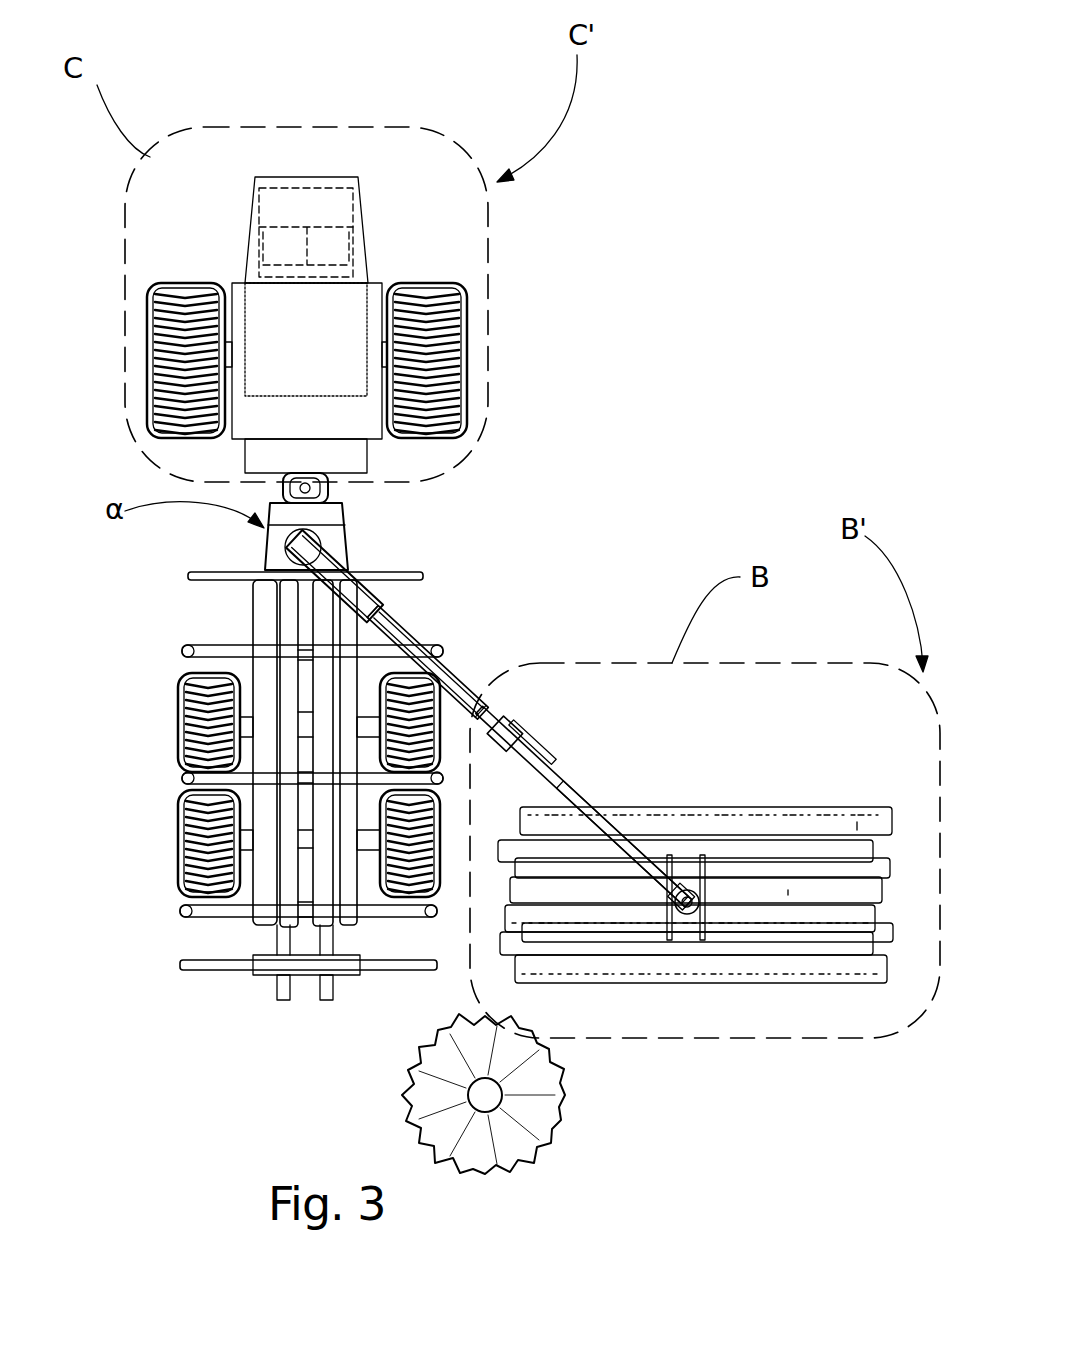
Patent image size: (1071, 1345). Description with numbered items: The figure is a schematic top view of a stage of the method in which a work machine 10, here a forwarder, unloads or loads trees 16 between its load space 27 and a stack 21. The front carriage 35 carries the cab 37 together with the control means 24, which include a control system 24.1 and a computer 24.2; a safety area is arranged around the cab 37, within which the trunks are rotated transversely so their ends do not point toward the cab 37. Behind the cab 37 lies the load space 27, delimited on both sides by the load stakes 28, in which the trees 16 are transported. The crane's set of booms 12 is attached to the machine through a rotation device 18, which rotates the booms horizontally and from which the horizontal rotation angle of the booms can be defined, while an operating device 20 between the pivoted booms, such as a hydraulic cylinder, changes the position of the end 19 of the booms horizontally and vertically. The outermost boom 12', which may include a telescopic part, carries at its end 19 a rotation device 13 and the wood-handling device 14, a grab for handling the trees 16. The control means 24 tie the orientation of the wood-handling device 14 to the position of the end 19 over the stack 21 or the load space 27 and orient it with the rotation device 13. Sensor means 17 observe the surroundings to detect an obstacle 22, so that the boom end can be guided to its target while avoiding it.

The work machine 10 is at (658, 490).
The set of booms 12 is at (492, 690).
The outermost boom 12' is at (623, 793).
The rotation device 13 is at (672, 920).
The wood-handling device 14 is at (722, 905).
The trees 16 is at (288, 927).
The sensor means 17 is at (753, 853).
The rotation device of the set of booms 18 is at (343, 542).
The end of the set of booms 19 is at (670, 908).
The operating device 20 is at (462, 668).
The stack 21 is at (737, 750).
The obstacle 22 is at (483, 1093).
The control means 24 is at (326, 229).
The control system 24.1 is at (330, 237).
The computer 24.2 is at (285, 237).
The load space 27 is at (220, 625).
The load stakes 28 is at (182, 651).
The front carriage 35 is at (512, 356).
The cab 37 is at (326, 358).